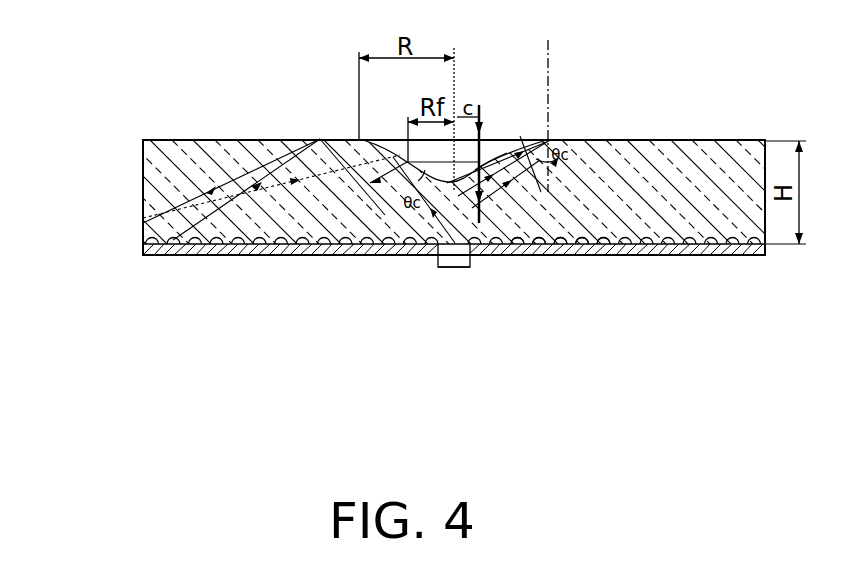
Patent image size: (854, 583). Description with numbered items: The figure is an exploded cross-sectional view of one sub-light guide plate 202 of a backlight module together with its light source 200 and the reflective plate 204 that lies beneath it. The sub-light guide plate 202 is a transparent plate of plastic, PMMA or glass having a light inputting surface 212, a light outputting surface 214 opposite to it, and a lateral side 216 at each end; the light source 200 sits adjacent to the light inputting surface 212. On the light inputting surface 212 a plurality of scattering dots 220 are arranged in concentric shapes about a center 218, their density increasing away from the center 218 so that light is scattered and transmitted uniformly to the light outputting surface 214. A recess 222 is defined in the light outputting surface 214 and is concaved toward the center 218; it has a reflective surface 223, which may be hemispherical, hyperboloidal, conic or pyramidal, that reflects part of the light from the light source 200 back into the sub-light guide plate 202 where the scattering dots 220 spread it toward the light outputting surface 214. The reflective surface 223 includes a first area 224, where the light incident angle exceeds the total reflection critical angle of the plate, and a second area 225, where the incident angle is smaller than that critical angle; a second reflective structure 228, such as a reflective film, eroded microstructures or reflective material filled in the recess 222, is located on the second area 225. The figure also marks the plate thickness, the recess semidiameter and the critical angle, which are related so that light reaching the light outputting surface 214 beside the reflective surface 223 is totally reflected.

The light source 200 is at (456, 257).
The sub-light guide plate 202 is at (62, 110).
The reflective plate 204 is at (740, 256).
The light inputting surface 212 is at (160, 252).
The light outputting surface 214 is at (166, 134).
The lateral side 216 is at (135, 176).
The center 218 is at (436, 266).
The scattering dots 220 is at (219, 246).
The recess 222 is at (386, 143).
The reflective surface 223 is at (653, 346).
The first area 224 is at (587, 258).
The second area 225 is at (531, 257).
The second reflective structure 228 is at (487, 168).